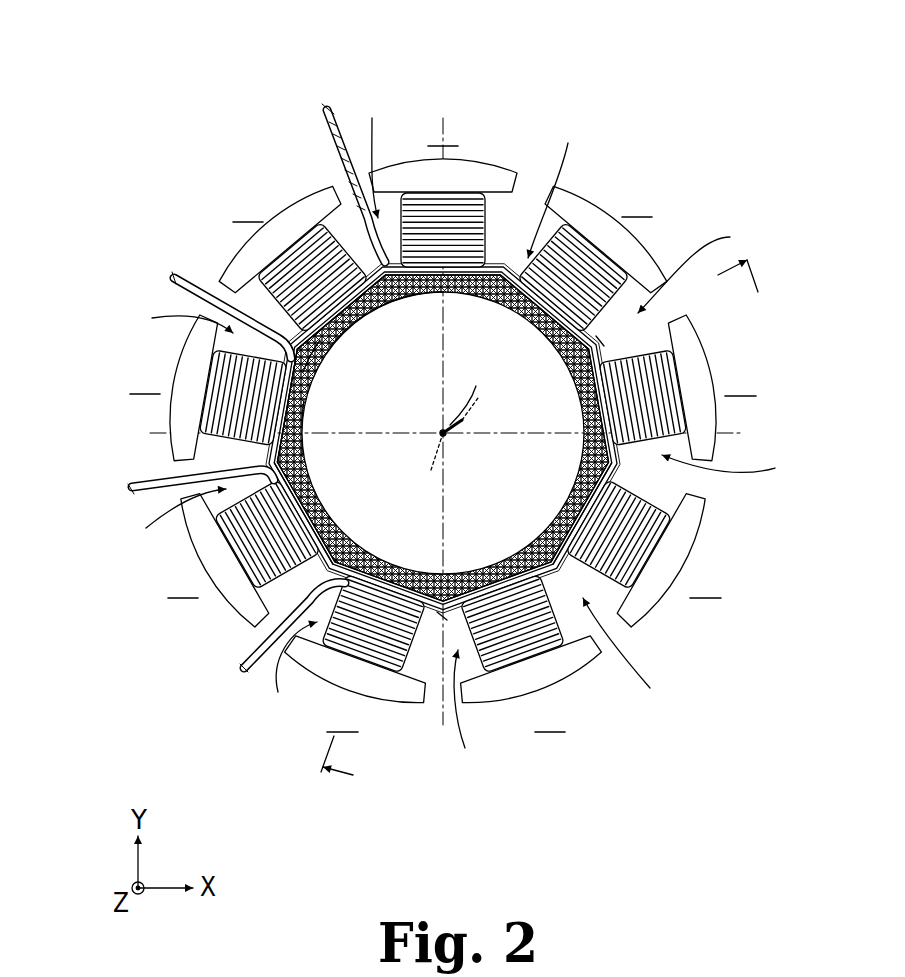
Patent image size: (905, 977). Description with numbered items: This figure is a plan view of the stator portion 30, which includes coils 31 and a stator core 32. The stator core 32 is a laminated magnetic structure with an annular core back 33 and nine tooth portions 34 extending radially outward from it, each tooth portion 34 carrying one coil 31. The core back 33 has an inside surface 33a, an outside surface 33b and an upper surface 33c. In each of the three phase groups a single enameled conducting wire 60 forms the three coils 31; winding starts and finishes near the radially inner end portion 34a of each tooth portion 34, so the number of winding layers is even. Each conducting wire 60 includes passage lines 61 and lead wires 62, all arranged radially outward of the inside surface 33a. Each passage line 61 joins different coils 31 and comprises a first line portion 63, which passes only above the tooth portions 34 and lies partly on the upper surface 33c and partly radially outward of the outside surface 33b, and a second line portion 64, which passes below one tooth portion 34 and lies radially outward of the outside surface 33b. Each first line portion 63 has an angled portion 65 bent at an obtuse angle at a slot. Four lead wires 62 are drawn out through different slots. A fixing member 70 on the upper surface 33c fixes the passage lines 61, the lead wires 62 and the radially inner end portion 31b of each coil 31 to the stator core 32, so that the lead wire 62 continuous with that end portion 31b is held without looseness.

The stator portion 30 is at (437, 413).
The coil 31 is at (421, 195).
The radially inner end portion of coil 31b is at (306, 427).
The stator core 32 is at (515, 228).
The core back 33 is at (325, 360).
The inside surface of core back 33a is at (346, 355).
The outside surface of core back 33b is at (297, 322).
The upper surface of core back 33c is at (312, 372).
The tooth portion 34 is at (483, 160).
The radially inner end portion of tooth portion 34a is at (308, 447).
The conducting wire 60 is at (173, 279).
The passage line 61 is at (570, 505).
The lead wire 62 is at (322, 112).
The first line portion 63 is at (583, 507).
The second line portion 64 is at (305, 472).
The angled portion 65 is at (604, 340).
The fixing member 70 is at (358, 310).